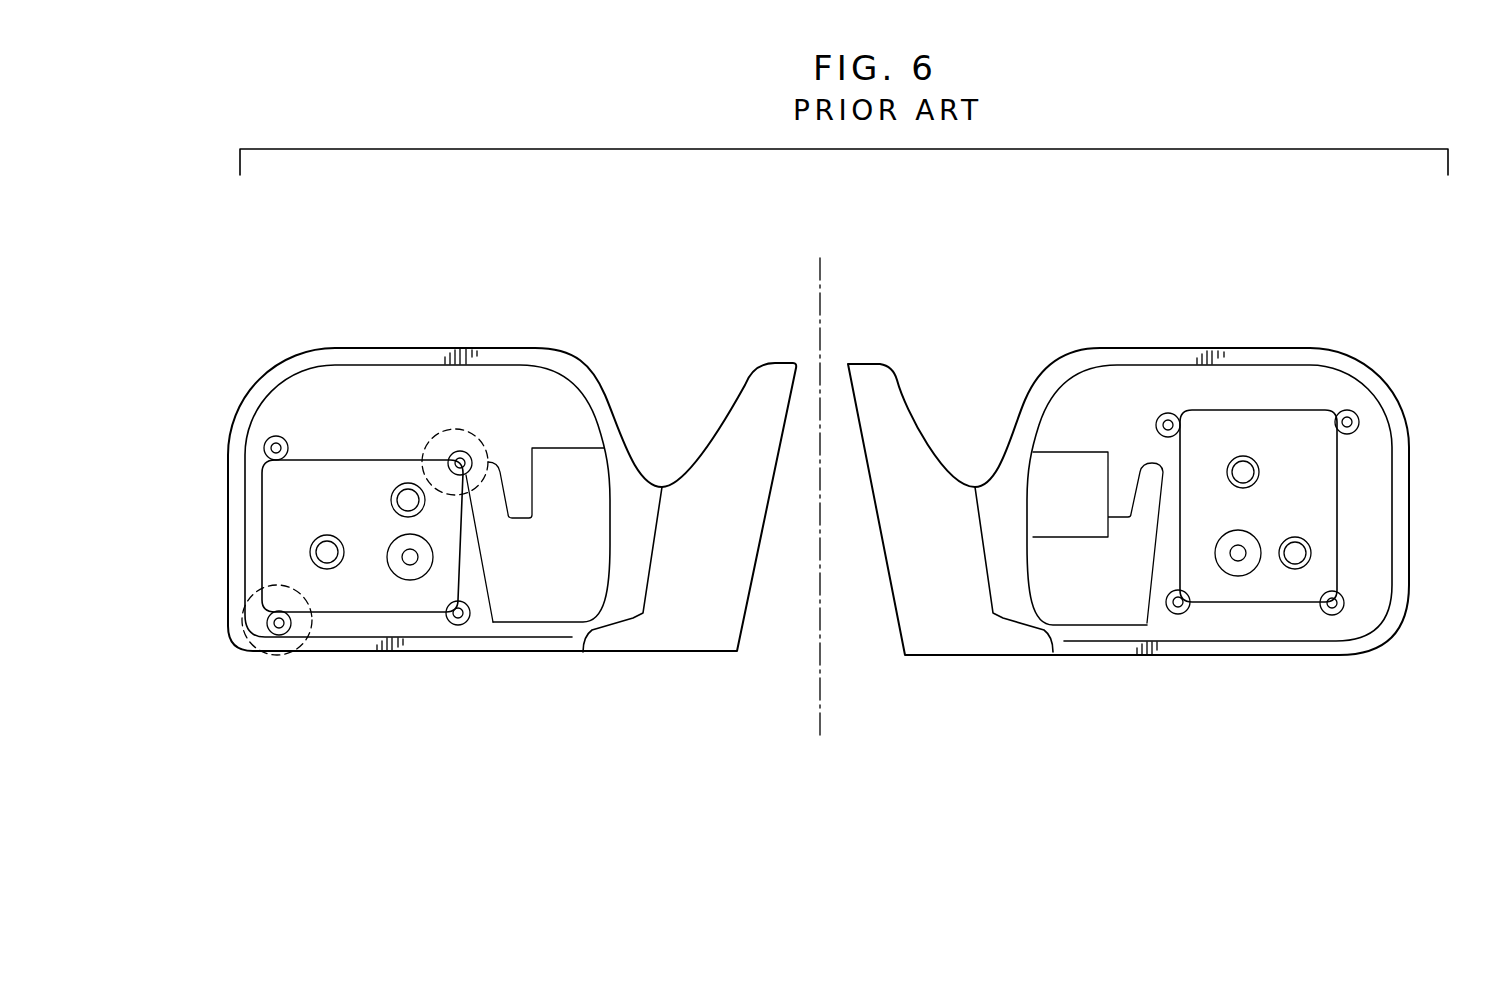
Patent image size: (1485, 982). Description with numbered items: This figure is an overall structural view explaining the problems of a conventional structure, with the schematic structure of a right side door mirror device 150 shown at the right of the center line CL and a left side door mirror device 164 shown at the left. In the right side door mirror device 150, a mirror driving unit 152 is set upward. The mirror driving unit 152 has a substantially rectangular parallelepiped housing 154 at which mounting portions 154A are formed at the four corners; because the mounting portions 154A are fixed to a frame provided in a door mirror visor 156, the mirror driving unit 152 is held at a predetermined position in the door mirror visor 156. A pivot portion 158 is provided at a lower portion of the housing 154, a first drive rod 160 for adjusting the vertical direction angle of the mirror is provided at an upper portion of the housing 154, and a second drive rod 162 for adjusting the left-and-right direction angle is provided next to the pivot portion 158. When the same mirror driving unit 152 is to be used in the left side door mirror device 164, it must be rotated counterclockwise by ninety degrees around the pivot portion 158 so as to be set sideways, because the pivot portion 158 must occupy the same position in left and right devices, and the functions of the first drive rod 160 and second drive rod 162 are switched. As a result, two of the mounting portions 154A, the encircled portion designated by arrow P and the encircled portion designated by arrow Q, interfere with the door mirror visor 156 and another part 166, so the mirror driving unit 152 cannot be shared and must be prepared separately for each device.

The right side door mirror device 150 is at (1239, 337).
The mirror driving unit 152 is at (357, 446).
The housing 154 is at (352, 598).
The mounting portions 154A is at (270, 440).
The door mirror visor 156 is at (413, 652).
The pivot portion 158 is at (411, 560).
The first drive rod 160 is at (310, 555).
The second drive rod 162 is at (408, 483).
The left side door mirror device 164 is at (470, 321).
The another part 166 is at (503, 448).
The arrow P is at (240, 637).
The arrow Q is at (472, 425).
The center line CL is at (826, 340).